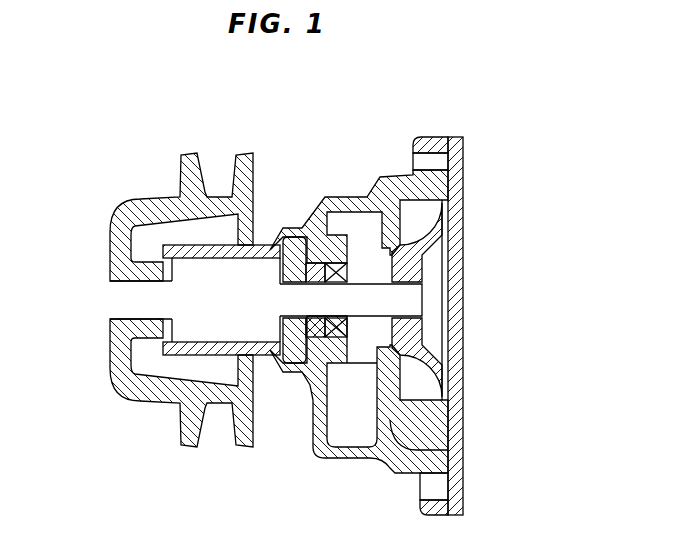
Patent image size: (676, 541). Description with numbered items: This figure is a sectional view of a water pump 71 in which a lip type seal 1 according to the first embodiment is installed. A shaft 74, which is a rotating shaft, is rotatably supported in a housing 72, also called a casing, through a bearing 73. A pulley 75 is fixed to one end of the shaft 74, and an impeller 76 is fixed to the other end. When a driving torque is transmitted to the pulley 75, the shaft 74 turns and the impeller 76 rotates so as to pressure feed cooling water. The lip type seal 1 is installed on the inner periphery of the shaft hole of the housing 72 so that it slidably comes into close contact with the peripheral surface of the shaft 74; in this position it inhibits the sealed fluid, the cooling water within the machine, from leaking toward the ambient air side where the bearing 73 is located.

The lip type seal 1 is at (355, 267).
The water pump 71 is at (215, 134).
The housing 72 is at (350, 452).
The bearing 73 is at (197, 322).
The shaft 74 is at (300, 302).
The pulley 75 is at (147, 205).
The impeller 76 is at (438, 222).